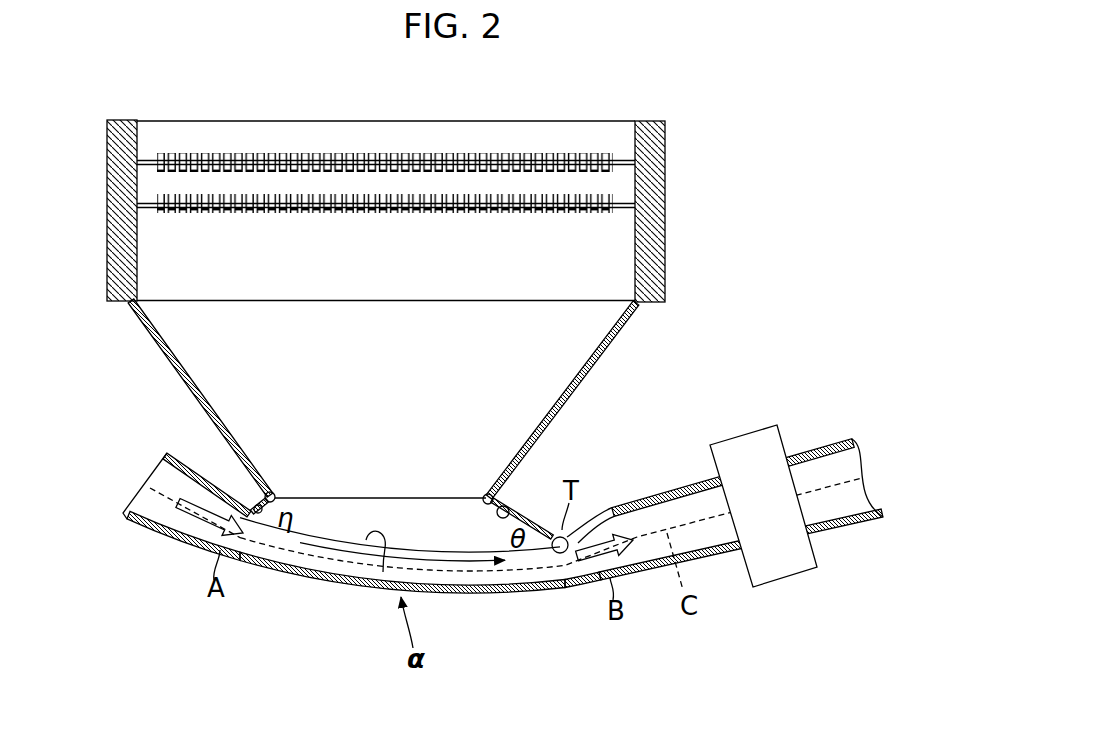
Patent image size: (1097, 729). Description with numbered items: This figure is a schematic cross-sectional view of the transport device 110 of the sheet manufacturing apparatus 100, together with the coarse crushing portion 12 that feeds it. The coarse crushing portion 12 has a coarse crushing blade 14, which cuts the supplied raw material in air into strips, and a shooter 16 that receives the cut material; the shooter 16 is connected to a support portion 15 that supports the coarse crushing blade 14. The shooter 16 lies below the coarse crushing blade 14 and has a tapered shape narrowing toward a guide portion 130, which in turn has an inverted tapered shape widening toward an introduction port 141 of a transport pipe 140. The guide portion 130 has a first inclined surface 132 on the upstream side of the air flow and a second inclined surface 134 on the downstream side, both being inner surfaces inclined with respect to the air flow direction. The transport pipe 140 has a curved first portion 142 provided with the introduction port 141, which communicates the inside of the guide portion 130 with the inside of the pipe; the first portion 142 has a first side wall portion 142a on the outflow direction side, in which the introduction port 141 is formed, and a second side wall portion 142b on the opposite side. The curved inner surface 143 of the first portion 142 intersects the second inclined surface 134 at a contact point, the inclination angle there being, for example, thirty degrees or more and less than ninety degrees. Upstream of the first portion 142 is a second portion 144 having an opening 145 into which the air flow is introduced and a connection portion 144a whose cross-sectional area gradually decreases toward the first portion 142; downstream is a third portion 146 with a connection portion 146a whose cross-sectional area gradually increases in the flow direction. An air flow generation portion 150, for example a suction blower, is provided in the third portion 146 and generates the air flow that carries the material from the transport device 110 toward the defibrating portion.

The sheet manufacturing apparatus 100 is at (707, 97).
The coarse crushing portion 12 is at (115, 112).
The coarse crushing blade 14 is at (307, 148).
The support portion 15 is at (108, 256).
The shooter 16 is at (200, 347).
The guide portion 130 is at (403, 528).
The first inclined surface 132 is at (258, 497).
The second inclined surface 134 is at (498, 503).
The transport pipe 140 is at (153, 442).
The introduction port 141 is at (366, 540).
The first portion 142 is at (293, 584).
The first side wall portion 142a is at (333, 536).
The second side wall portion 142b is at (332, 594).
The inner surface 143 is at (608, 508).
The second portion 144 is at (140, 532).
The connection portion 144a is at (180, 541).
The opening 145 is at (140, 487).
The third portion 146 is at (713, 562).
The connection portion 146a is at (628, 578).
The air flow generation portion 150 is at (778, 567).
The transport device 110 is at (610, 462).